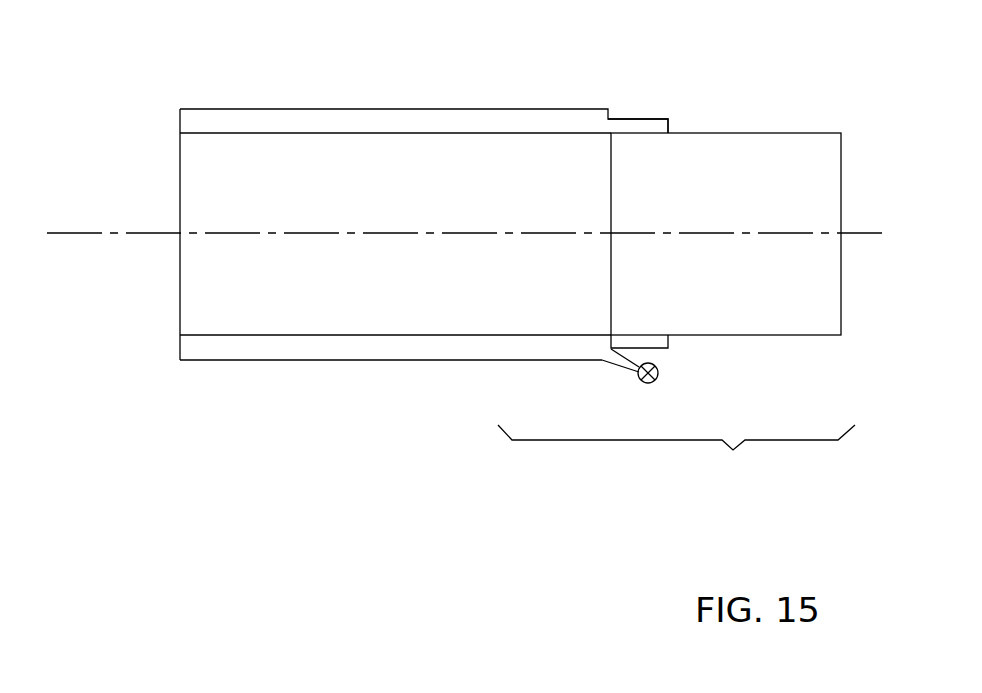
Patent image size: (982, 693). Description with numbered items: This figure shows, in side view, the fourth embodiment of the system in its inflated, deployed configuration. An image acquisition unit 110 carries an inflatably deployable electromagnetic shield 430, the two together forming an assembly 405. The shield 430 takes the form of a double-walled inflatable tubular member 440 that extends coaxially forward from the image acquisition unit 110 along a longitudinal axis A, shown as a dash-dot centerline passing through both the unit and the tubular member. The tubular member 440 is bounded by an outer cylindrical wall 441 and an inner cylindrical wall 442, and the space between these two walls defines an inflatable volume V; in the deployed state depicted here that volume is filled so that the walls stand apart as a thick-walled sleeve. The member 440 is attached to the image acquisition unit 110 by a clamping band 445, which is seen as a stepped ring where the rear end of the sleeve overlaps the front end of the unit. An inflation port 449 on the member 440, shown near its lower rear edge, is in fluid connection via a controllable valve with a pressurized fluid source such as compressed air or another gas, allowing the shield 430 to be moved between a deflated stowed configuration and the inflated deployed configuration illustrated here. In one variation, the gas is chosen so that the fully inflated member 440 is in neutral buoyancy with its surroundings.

The longitudinal axis A is at (119, 226).
The double-walled inflatable tubular member 440 is at (568, 109).
The clamping band 445 is at (647, 119).
The inner cylindrical wall 442 is at (270, 333).
The outer cylindrical wall 441 is at (313, 360).
The inflatable volume V is at (402, 350).
The inflatably deployable electromagnetic shield 430 is at (497, 360).
The inflation port 449 is at (643, 382).
The image acquisition unit 110 is at (782, 332).
The assembly 405 is at (676, 457).